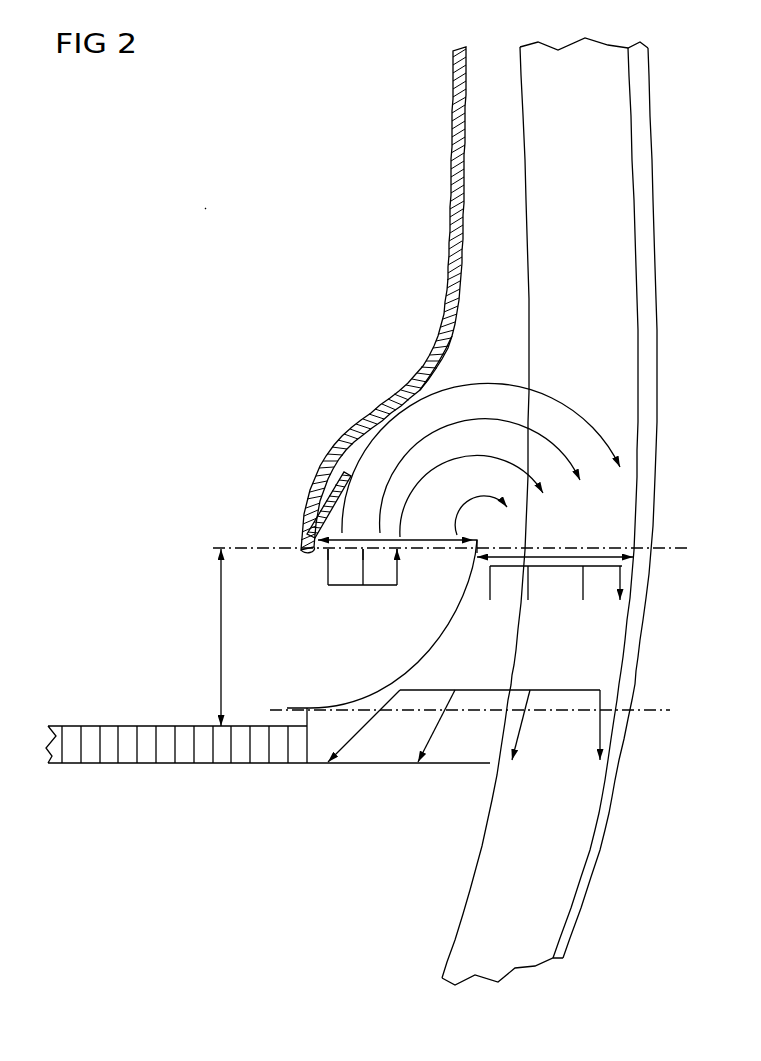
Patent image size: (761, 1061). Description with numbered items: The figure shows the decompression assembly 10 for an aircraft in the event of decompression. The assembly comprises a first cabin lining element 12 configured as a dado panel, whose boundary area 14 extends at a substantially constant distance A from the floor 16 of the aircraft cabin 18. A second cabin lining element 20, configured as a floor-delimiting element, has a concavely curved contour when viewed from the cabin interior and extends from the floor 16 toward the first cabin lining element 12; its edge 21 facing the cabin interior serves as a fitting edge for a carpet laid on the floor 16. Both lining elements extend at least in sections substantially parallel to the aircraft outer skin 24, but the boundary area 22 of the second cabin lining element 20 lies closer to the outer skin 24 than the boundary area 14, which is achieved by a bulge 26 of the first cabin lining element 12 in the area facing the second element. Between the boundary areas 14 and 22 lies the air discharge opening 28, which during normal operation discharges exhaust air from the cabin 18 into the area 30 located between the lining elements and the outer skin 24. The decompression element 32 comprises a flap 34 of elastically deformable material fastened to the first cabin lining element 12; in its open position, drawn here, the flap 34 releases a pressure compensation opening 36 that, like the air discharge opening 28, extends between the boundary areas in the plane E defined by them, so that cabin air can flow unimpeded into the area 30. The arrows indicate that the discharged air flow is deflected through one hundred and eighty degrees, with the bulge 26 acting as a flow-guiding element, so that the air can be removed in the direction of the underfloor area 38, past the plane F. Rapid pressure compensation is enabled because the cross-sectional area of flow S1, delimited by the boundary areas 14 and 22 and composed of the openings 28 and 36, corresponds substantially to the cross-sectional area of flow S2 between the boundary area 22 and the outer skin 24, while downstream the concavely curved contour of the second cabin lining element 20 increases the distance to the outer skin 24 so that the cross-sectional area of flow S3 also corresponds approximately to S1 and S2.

The decompression assembly 10 is at (205, 208).
The first cabin lining element 12 is at (451, 186).
The boundary area of the first cabin lining element 14 is at (306, 560).
The floor 16 is at (128, 757).
The aircraft cabin 18 is at (166, 386).
The second cabin lining element 20 is at (405, 672).
The edge 21 is at (300, 722).
The boundary area of the second cabin lining element 22 is at (480, 536).
The aircraft outer skin 24 is at (650, 295).
The bulge 26 is at (340, 437).
The air discharge opening 28 is at (398, 586).
The area of the aircraft between the cabin lining elements and the outer skin 30 is at (601, 388).
The decompression element 32 is at (302, 512).
The flap 34 is at (330, 487).
The pressure compensation opening 36 is at (353, 543).
The underfloor area 38 is at (431, 868).
The distance A is at (218, 637).
The plane E is at (670, 548).
The plane F is at (658, 709).
The cross-sectional area of flow S1 is at (398, 540).
The cross-sectional area of flow S2 is at (562, 549).
The cross-sectional area of flow S3 is at (482, 708).